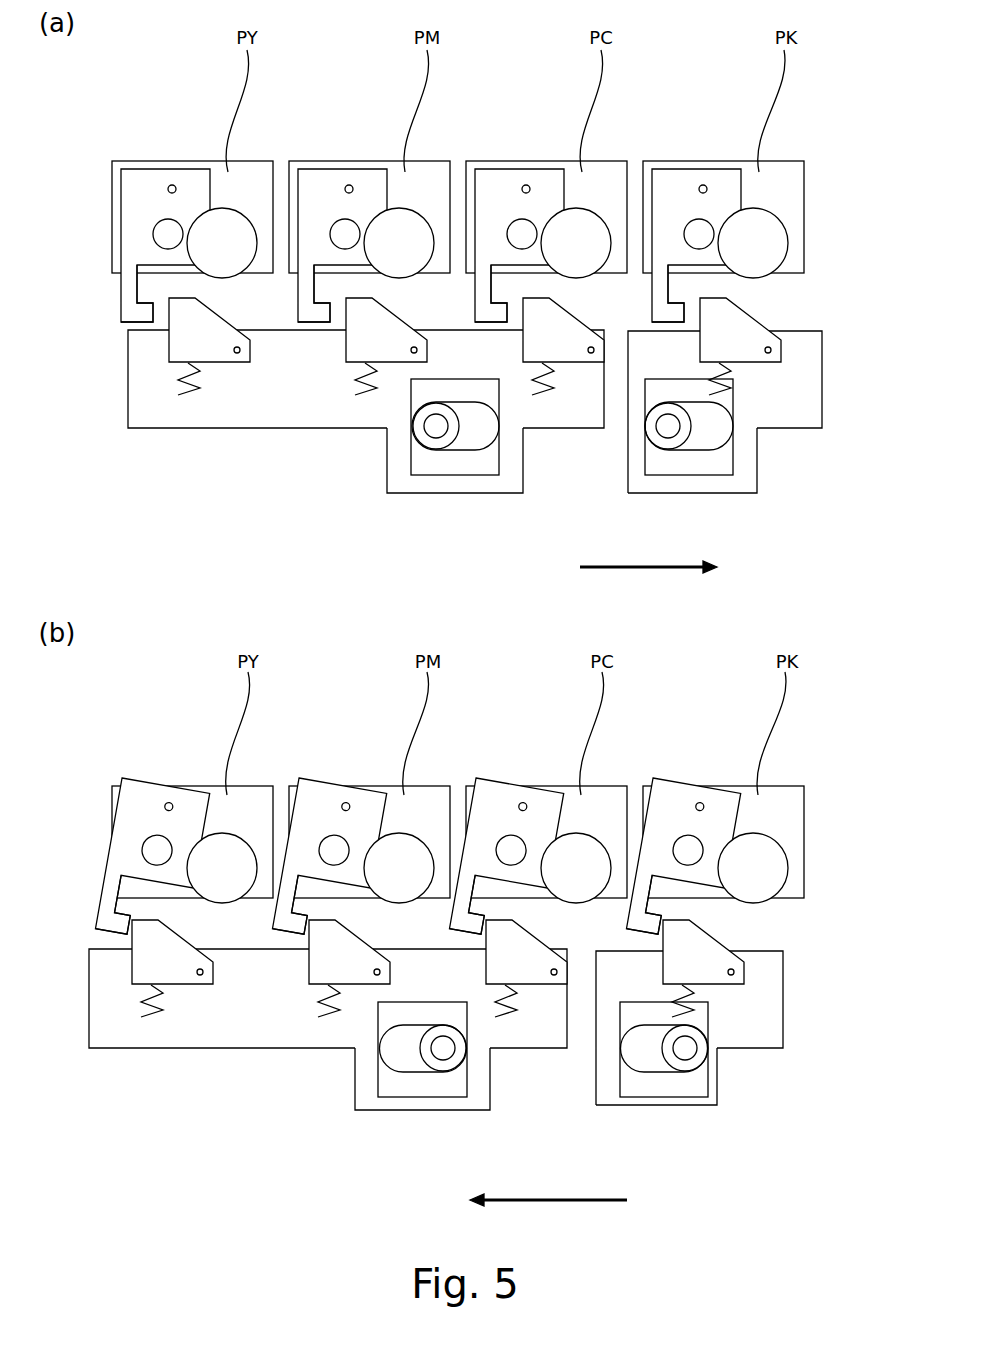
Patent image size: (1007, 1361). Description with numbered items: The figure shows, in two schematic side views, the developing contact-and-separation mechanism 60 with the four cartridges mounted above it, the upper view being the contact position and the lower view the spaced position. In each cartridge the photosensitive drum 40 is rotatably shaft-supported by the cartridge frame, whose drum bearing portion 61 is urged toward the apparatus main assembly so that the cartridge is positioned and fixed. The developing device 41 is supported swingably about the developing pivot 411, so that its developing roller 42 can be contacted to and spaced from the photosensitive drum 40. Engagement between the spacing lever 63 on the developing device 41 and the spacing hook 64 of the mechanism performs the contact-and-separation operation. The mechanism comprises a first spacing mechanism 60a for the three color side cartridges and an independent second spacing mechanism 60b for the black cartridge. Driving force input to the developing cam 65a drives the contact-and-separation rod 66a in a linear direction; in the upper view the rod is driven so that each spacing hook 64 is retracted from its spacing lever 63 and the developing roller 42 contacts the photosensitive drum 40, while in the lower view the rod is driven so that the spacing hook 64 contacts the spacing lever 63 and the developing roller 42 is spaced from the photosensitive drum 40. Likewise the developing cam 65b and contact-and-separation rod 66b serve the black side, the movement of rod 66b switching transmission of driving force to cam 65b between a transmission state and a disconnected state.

The photosensitive drum 40 is at (230, 227).
The developing device 41 is at (138, 175).
The developing pivot 411 is at (172, 185).
The developing roller 42 is at (172, 230).
The developing contact-and-separation mechanism 60 is at (838, 208).
The first spacing mechanism 60a is at (400, 497).
The second spacing mechanism 60b is at (773, 490).
The drum bearing portion 61 is at (223, 280).
The spacing lever 63 is at (140, 315).
The spacing hook 64 is at (215, 357).
The developing cam 65a is at (467, 443).
The developing cam 65b is at (698, 442).
The contact-and-separation rod 66a is at (257, 413).
The contact-and-separation rod 66b is at (802, 410).